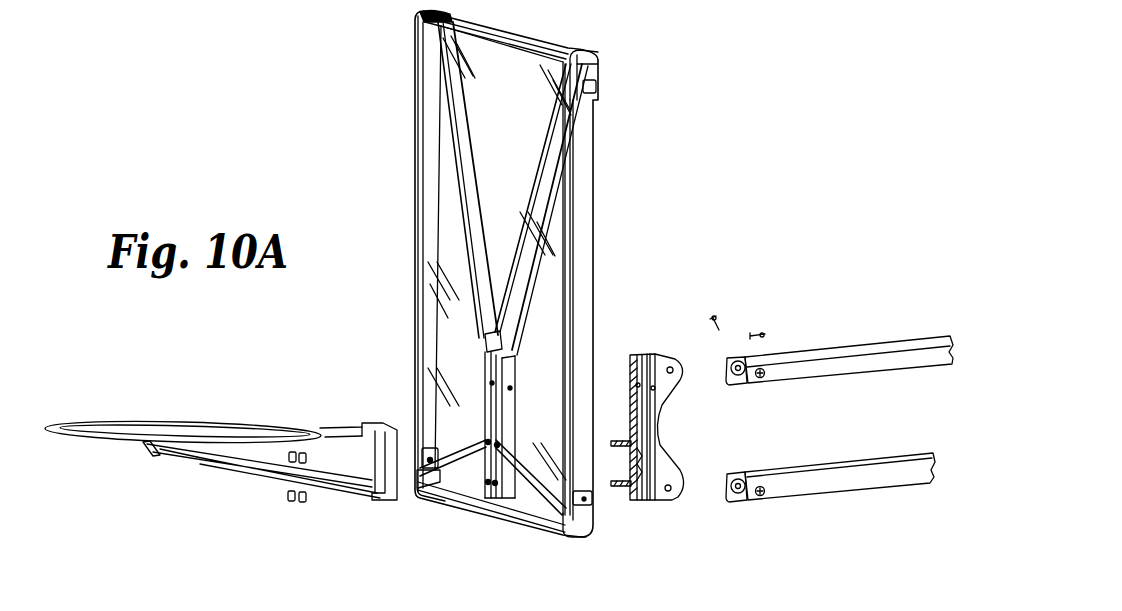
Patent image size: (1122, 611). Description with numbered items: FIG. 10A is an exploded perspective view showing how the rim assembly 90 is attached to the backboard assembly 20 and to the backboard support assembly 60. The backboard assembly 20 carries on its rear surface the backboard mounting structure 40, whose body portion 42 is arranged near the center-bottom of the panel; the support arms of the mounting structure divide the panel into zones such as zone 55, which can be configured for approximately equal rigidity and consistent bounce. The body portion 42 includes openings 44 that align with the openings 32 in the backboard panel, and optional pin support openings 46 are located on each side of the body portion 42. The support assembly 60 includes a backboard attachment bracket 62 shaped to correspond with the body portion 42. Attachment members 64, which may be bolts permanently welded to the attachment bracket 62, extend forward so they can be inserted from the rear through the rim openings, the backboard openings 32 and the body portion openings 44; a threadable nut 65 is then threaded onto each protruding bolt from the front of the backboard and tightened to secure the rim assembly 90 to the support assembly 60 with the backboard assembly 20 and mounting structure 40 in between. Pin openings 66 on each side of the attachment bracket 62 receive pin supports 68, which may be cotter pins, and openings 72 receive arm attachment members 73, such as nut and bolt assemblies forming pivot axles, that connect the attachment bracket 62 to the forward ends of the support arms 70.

The backboard assembly 20 is at (645, 137).
The zone 55 is at (512, 101).
The backboard mounting structure 40 is at (552, 272).
The body portion 42 is at (508, 447).
The pin support opening 46 is at (490, 384).
The backboard opening 32 is at (428, 488).
The opening 44 is at (487, 444).
The basketball rim assembly 90 is at (338, 425).
The threadable nut 65 is at (289, 502).
The backboard attachment bracket 62 is at (652, 356).
The attachment member 64 is at (628, 470).
The pin opening 66 is at (636, 384).
The opening 72 is at (672, 368).
The pin support 68 is at (714, 316).
The arm attachment member 73 is at (737, 364).
The support arm 70 is at (833, 365).
The backboard support assembly 60 is at (898, 310).